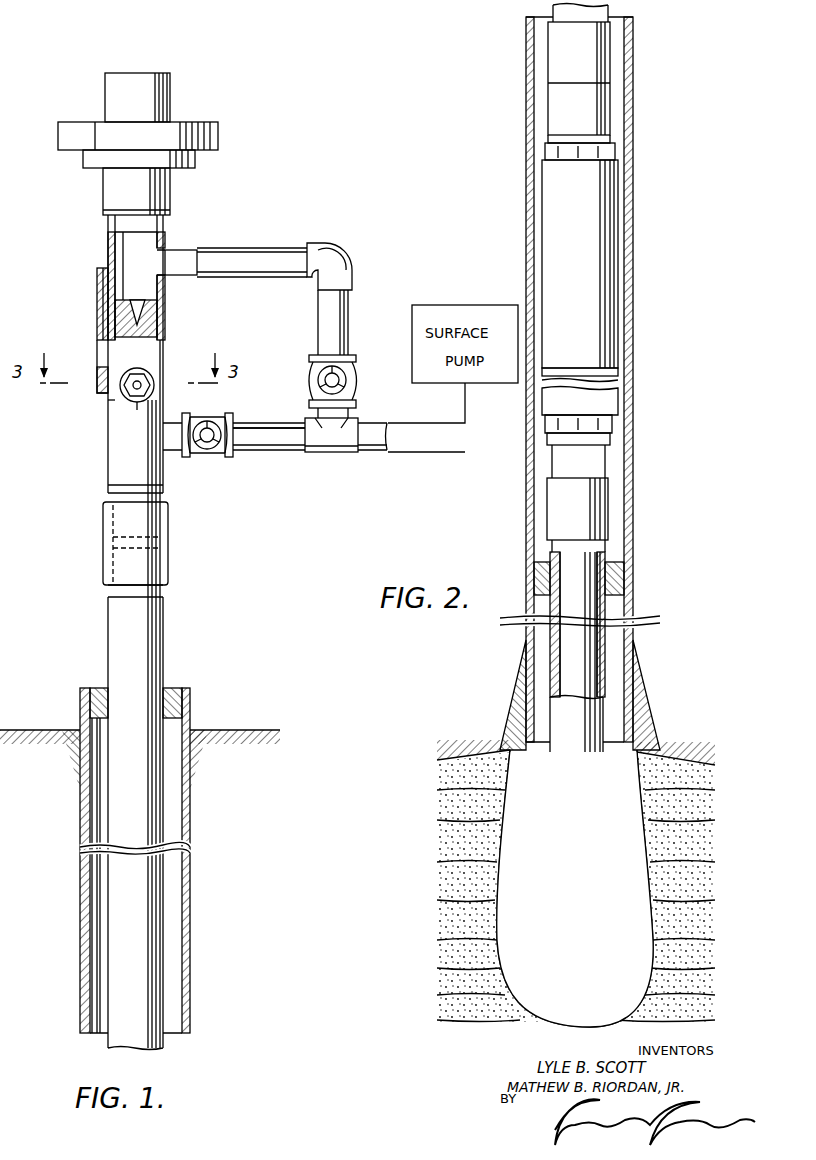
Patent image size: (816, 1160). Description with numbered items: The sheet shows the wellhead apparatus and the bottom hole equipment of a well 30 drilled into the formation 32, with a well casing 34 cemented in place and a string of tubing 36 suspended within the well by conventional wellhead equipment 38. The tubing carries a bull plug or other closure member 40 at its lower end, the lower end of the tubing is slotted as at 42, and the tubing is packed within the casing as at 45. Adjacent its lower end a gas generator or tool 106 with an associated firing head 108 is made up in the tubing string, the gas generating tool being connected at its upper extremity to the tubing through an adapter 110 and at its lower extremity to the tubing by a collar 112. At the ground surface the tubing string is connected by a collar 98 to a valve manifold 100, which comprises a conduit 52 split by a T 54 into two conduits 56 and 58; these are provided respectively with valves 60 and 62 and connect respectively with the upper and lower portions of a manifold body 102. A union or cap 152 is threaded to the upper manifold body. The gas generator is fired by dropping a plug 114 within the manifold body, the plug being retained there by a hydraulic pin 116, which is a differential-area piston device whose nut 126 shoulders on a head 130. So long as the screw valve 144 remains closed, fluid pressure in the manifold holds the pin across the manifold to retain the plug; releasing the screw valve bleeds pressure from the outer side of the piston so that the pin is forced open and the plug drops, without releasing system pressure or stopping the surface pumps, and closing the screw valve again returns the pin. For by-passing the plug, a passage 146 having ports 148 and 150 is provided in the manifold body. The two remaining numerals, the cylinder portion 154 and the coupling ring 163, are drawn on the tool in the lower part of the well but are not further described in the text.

In FIG. 1, the well 30 is at (198, 948).
In FIG. 2, the well 30 is at (490, 728).
In FIG. 2, the formation 32 is at (450, 880).
In FIG. 1, the well casing 34 is at (183, 828).
In FIG. 2, the well casing 34 is at (530, 508).
In FIG. 1, the string of tubing 36 is at (115, 642).
In FIG. 2, the string of tubing 36 is at (610, 10).
In FIG. 1, the wellhead equipment 38 is at (170, 688).
In FIG. 2, the bull plug 40 is at (570, 900).
In FIG. 2, the slots 42 is at (600, 655).
In FIG. 2, the packer 45 is at (622, 580).
In FIG. 1, the conduit 52 is at (390, 437).
In FIG. 1, the T 54 is at (347, 440).
In FIG. 1, the conduit 56 is at (340, 318).
In FIG. 1, the conduit 58 is at (268, 433).
In FIG. 1, the valve 60 is at (356, 380).
In FIG. 1, the valve 62 is at (205, 458).
In FIG. 1, the collar 98 is at (118, 562).
In FIG. 1, the valve manifold 100 is at (295, 452).
In FIG. 1, the manifold body 102 is at (163, 350).
In FIG. 2, the gas generator 106 is at (592, 400).
In FIG. 2, the firing head 108 is at (555, 195).
In FIG. 2, the adapter 110 is at (600, 52).
In FIG. 2, the collar 112 is at (605, 505).
In FIG. 1, the plug 114 is at (112, 325).
In FIG. 1, the hydraulic pin 116 is at (123, 407).
In FIG. 1, the nut 126 is at (140, 398).
In FIG. 1, the head 130 is at (150, 390).
In FIG. 1, the screw valve 144 is at (147, 375).
In FIG. 1, the passage 146 is at (105, 300).
In FIG. 1, the port 148 is at (100, 282).
In FIG. 1, the port 150 is at (100, 388).
In FIG. 1, the union or cap 152 is at (172, 196).
In FIG. 2, the pump cylinder 154 is at (600, 105).
In FIG. 2, the coupling ring 163 is at (612, 152).